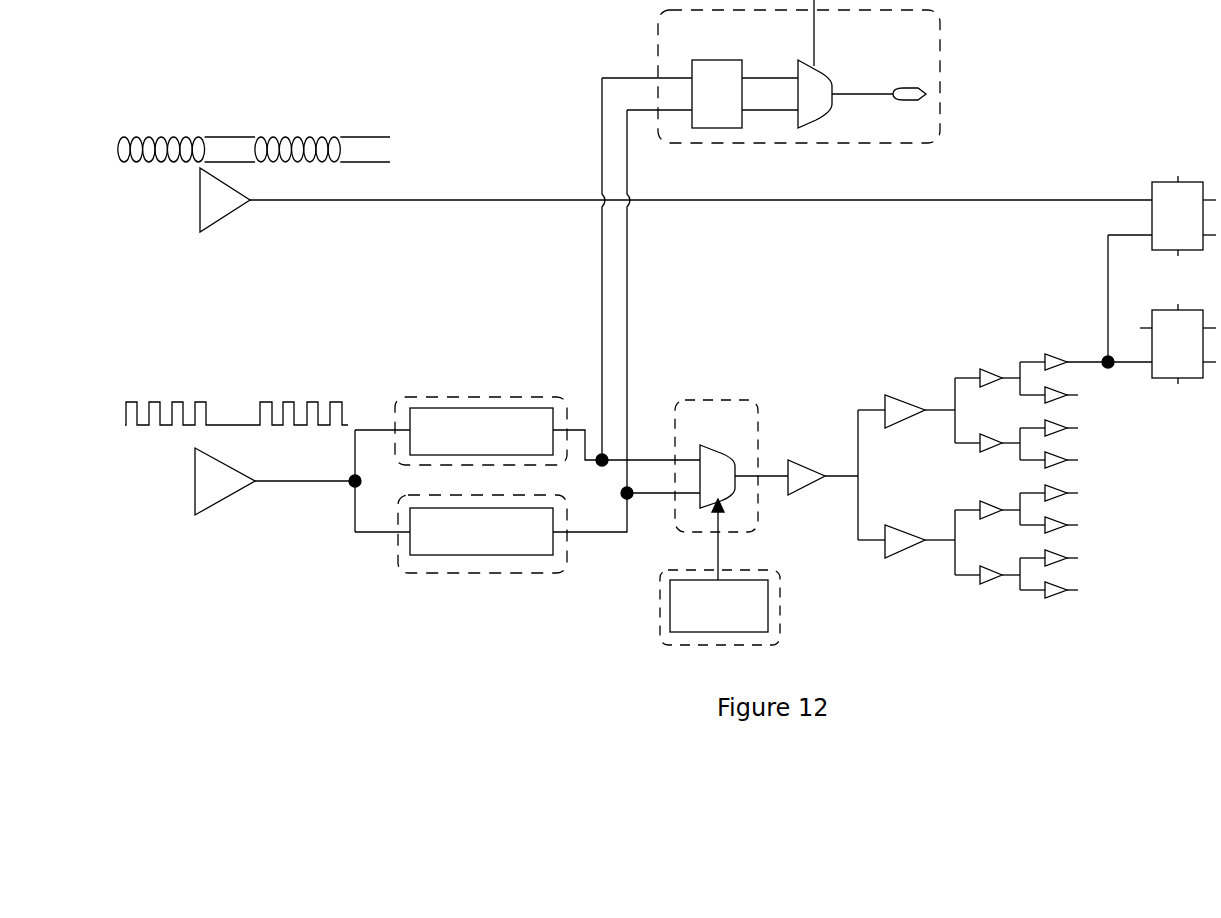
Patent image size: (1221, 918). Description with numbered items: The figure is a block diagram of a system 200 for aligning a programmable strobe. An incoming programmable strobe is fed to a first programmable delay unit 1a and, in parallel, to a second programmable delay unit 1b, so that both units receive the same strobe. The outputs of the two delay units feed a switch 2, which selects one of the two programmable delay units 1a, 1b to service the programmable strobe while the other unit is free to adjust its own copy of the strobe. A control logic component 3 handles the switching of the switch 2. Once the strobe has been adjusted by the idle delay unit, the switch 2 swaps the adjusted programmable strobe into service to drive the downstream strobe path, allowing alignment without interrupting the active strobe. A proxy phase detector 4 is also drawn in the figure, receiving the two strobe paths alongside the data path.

The system for aligning a programmable strobe 200 is at (336, 100).
The first programmable delay unit 1a is at (547, 409).
The second programmable delay unit 1b is at (549, 552).
The switch 2 is at (731, 469).
The control logic component 3 is at (700, 607).
The proxy phase detector 4 is at (765, 76).